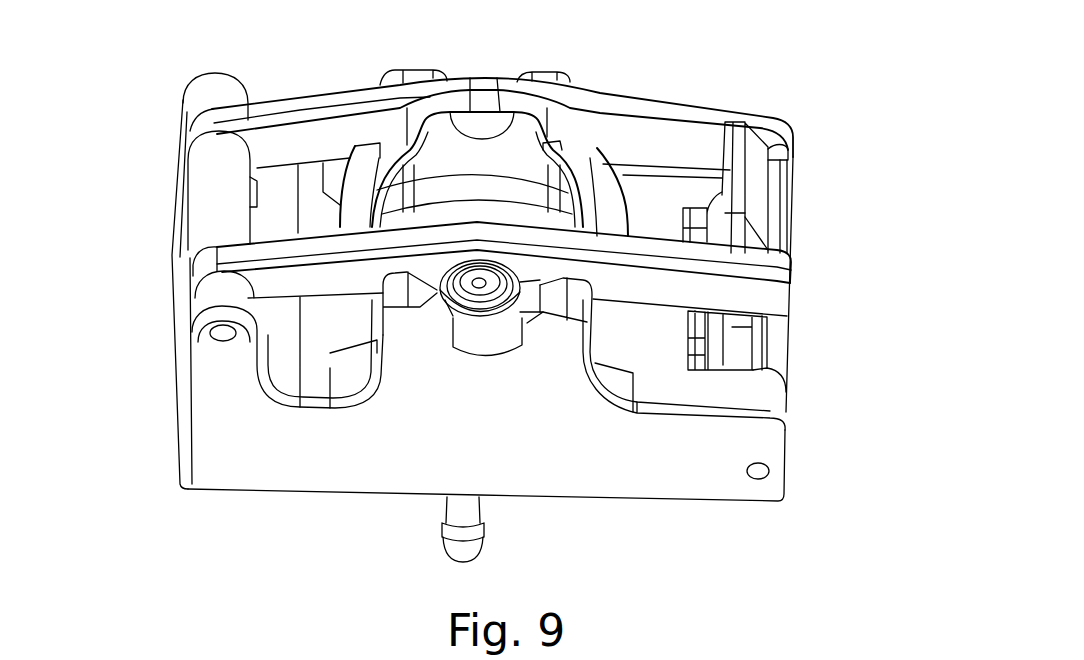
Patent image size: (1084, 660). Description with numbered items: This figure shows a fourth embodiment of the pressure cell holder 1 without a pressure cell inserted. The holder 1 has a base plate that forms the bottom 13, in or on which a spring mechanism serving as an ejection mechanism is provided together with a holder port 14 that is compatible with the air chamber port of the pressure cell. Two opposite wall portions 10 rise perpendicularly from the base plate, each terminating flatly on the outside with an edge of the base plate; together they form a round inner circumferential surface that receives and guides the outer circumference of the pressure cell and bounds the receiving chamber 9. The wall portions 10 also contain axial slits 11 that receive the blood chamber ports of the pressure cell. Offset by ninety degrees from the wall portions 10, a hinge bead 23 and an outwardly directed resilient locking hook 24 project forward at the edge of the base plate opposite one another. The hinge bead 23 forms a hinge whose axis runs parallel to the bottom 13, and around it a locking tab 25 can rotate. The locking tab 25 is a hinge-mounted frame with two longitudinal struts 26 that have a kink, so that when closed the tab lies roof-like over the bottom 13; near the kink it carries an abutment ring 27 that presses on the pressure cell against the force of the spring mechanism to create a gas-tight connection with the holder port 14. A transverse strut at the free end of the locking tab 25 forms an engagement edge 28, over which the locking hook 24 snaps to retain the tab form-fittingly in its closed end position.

The holder 1 is at (136, 111).
The receiving chamber 9 is at (490, 147).
The wall portions 10 is at (547, 332).
The axial slits 11 is at (472, 342).
The bottom 13 is at (607, 343).
The holder port 14 is at (473, 300).
The hinge bead 23 is at (202, 217).
The resilient locking hook 24 is at (765, 192).
The locking tab 25 is at (660, 111).
The longitudinal struts 26 is at (735, 290).
The abutment ring 27 is at (590, 156).
The engagement edge 28 is at (784, 235).